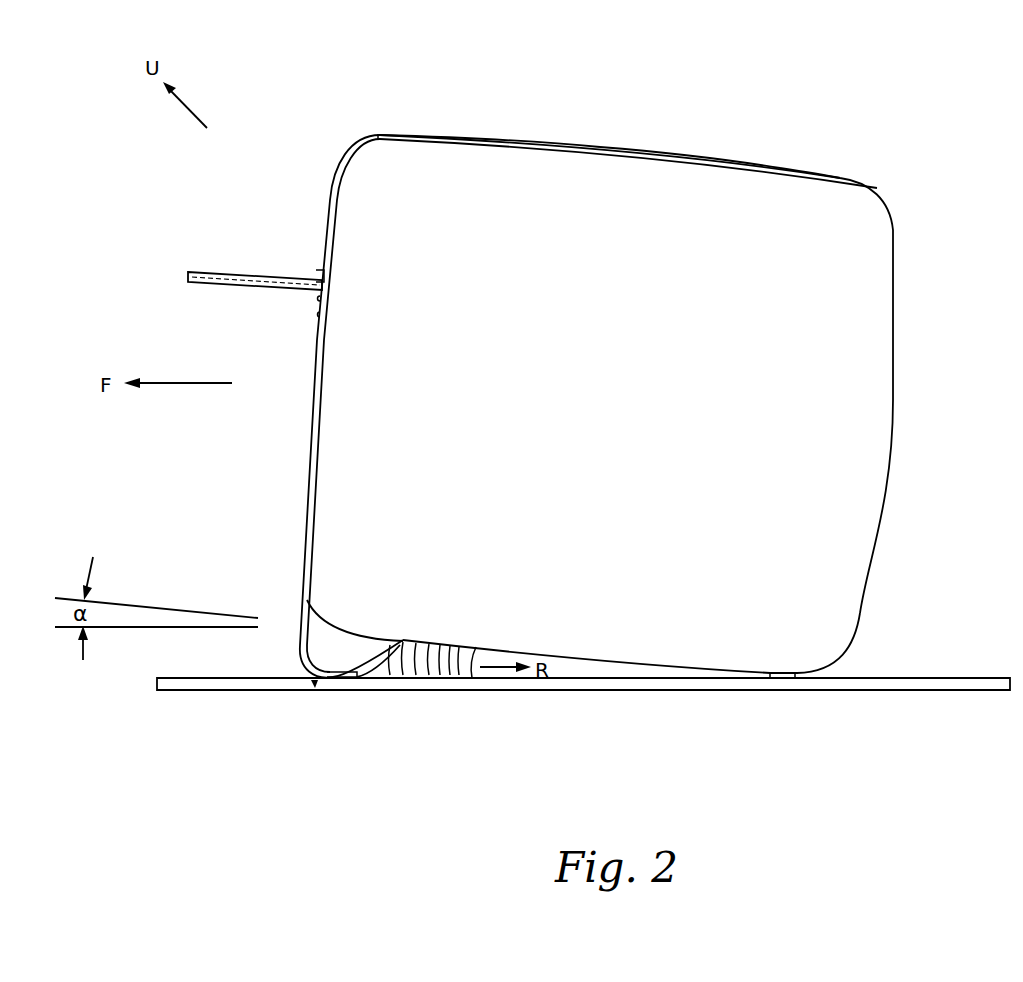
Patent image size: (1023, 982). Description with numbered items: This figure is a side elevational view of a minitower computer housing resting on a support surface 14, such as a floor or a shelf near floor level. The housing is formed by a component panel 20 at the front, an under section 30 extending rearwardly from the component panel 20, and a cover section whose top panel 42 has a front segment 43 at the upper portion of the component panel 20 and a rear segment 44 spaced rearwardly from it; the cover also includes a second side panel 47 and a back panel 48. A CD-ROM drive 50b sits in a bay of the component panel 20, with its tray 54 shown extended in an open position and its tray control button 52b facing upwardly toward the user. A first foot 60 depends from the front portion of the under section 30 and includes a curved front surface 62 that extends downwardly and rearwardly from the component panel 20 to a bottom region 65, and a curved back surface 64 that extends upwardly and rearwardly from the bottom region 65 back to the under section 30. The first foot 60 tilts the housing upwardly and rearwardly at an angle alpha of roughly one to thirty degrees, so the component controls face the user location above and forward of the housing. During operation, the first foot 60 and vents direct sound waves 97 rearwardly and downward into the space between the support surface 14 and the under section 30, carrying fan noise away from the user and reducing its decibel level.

The support surface 14 is at (974, 678).
The component panel 20 is at (310, 414).
The under section 30 is at (473, 673).
The top panel 42 is at (717, 167).
The front segment 43 is at (460, 135).
The rear segment 44 is at (817, 171).
The second side panel 47 is at (830, 339).
The back panel 48 is at (880, 513).
The CD-ROM drive 50b is at (315, 276).
The tray control button 52b is at (315, 303).
The tray 54 is at (188, 275).
The first foot 60 is at (313, 637).
The front surface 62 is at (305, 660).
The back surface 64 is at (368, 665).
The bottom region 65 is at (313, 687).
The sound waves 97 is at (397, 673).